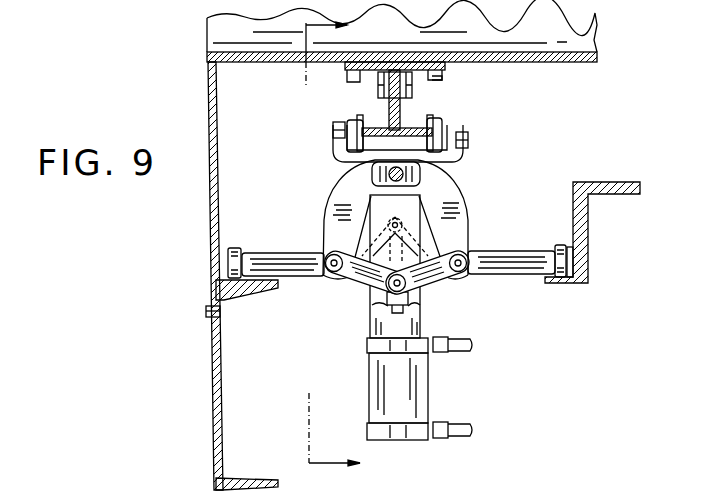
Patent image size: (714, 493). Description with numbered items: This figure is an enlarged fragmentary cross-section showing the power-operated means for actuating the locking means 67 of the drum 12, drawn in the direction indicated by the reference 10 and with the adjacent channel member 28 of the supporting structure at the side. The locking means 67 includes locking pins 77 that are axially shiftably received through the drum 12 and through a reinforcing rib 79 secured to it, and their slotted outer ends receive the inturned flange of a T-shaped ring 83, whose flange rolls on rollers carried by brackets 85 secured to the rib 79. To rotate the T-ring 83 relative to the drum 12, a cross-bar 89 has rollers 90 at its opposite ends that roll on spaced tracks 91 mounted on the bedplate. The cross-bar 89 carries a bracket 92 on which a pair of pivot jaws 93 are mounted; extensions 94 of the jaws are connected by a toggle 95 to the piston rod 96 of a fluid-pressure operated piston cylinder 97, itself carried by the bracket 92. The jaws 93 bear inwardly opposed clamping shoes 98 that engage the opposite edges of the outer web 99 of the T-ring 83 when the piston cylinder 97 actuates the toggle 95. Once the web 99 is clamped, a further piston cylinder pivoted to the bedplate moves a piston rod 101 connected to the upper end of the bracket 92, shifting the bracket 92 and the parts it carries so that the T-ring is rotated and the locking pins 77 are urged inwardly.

The direction of travel arrow 10 is at (320, 238).
The drum 12 is at (550, 56).
The side channel member 28 is at (215, 367).
The locking means 67 is at (441, 80).
The locking pins 77 is at (378, 104).
The reinforcing rib 79 is at (442, 72).
The T-shaped ring 83 is at (408, 118).
The brackets 85 is at (382, 80).
The cross-bar 89 is at (490, 275).
The rollers 90 is at (231, 248).
The tracks 91 is at (221, 250).
The bracket 92 is at (423, 303).
The pivot jaws 93 is at (340, 160).
The extensions 94 is at (336, 230).
The toggle 95 is at (345, 272).
The piston rod 96 is at (372, 303).
The piston cylinder 97 is at (416, 372).
The clamping shoes 98 is at (350, 127).
The outer web 99 is at (419, 139).
The piston rod 101 is at (421, 170).